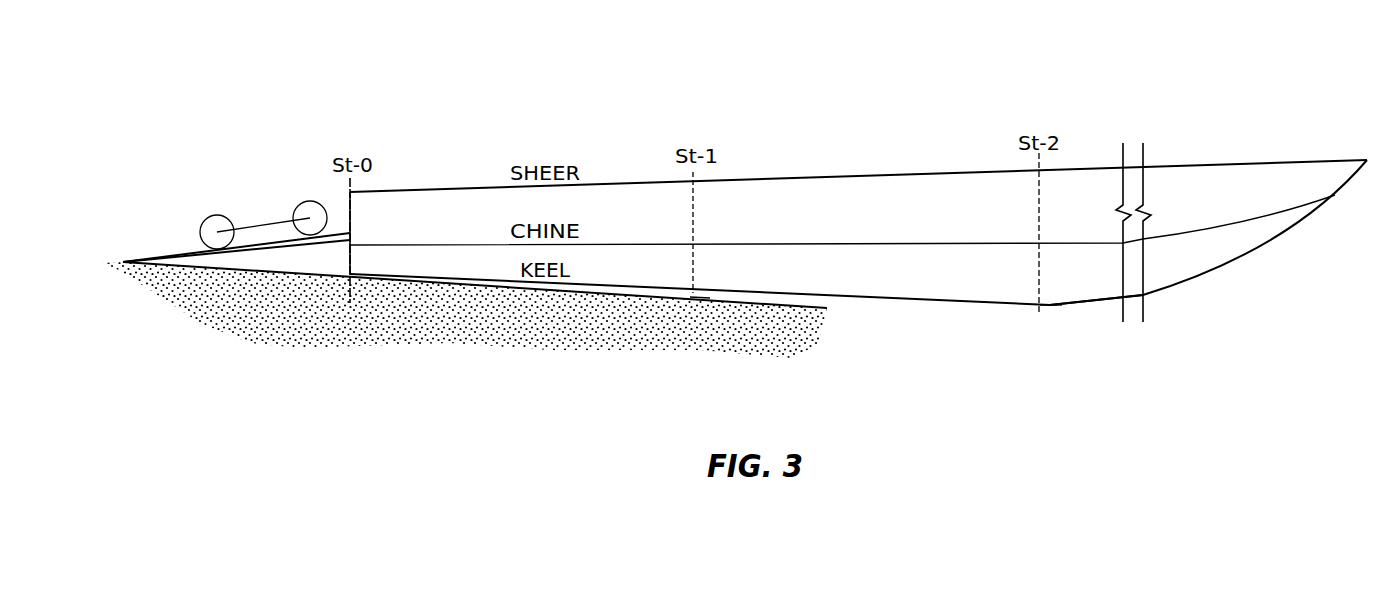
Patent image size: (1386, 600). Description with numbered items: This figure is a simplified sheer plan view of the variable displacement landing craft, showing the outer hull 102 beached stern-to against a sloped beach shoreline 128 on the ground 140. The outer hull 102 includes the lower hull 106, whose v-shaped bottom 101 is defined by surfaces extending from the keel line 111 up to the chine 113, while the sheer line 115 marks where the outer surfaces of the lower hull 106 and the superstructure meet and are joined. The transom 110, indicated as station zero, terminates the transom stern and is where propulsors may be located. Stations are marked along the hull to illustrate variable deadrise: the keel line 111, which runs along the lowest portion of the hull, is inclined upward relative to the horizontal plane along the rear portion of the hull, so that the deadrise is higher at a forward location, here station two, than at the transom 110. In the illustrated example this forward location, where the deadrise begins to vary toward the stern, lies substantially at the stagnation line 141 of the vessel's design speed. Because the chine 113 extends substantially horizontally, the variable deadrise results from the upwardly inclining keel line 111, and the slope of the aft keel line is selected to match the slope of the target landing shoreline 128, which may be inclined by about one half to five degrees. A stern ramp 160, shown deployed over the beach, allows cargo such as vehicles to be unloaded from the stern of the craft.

The v-shaped bottom 101 is at (421, 257).
The outer hull 102 is at (817, 250).
The lower hull portion 106 is at (1063, 307).
The transom 110 is at (350, 263).
The keel line 111 is at (737, 298).
The chine 113 is at (808, 244).
The sheer line 115 is at (627, 183).
The shoreline 128 is at (717, 300).
The ground 140 is at (286, 320).
The stagnation line 141 is at (1051, 306).
The stern ramp 160 is at (176, 256).